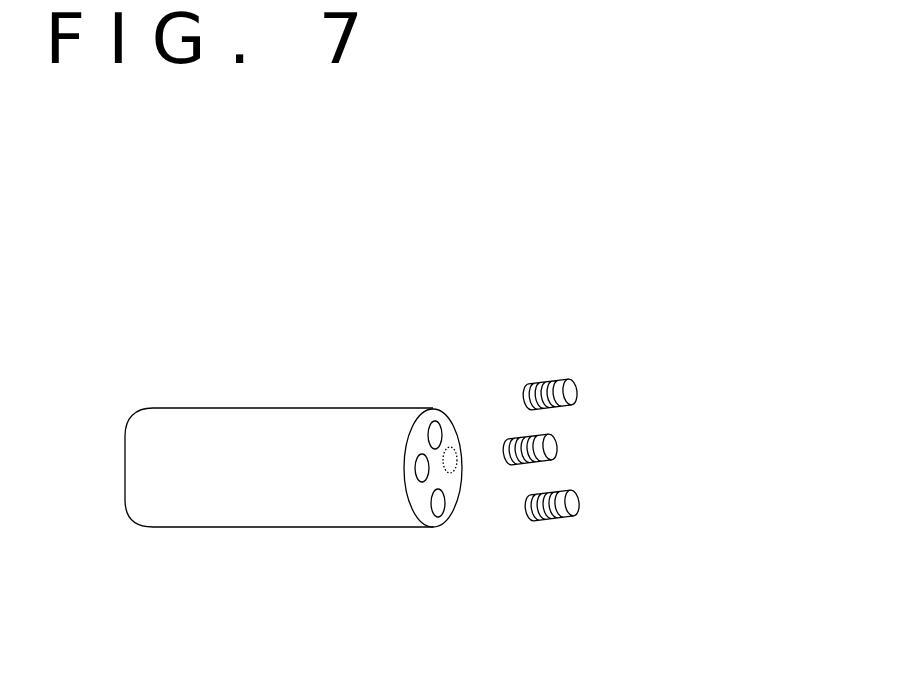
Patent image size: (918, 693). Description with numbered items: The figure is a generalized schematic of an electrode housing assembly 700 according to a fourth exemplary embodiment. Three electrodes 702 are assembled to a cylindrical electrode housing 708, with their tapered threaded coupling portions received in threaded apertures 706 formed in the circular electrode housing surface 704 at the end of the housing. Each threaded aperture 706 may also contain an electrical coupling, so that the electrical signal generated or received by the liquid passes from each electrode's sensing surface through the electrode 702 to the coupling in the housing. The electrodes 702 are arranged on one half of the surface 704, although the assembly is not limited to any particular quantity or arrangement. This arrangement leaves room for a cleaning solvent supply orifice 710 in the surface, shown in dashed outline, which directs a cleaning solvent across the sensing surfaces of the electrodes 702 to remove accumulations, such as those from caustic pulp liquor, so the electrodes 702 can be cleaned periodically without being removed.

The electrode housing assembly 700 is at (478, 203).
The electrodes 702 is at (586, 485).
The electrode housing surface 704 is at (432, 401).
The threaded aperture 706 is at (420, 448).
The electrode housing 708 is at (303, 472).
The cleaning solvent supply orifice 710 is at (473, 487).